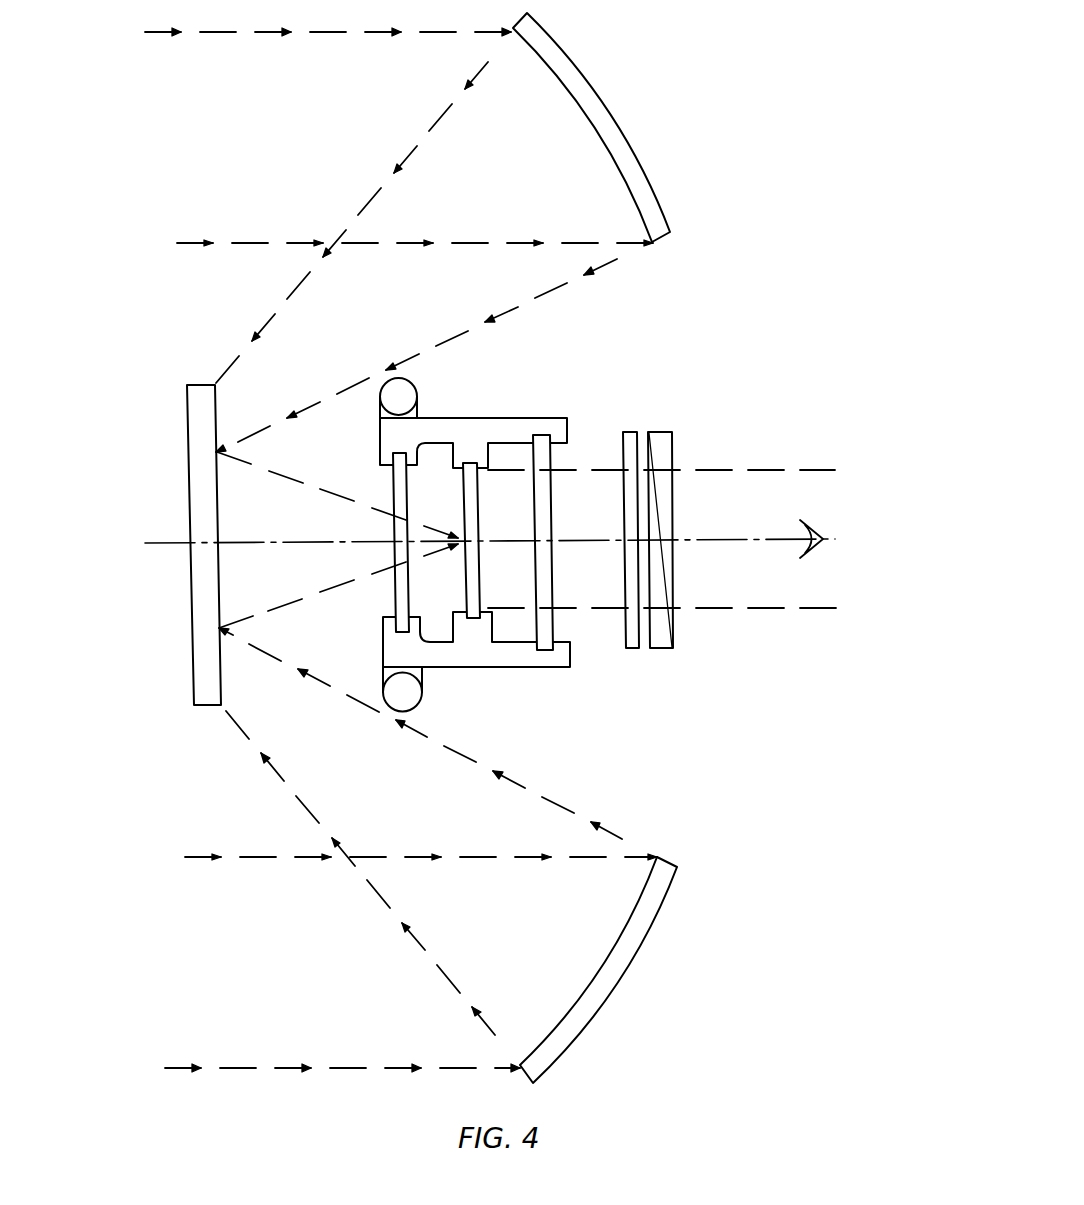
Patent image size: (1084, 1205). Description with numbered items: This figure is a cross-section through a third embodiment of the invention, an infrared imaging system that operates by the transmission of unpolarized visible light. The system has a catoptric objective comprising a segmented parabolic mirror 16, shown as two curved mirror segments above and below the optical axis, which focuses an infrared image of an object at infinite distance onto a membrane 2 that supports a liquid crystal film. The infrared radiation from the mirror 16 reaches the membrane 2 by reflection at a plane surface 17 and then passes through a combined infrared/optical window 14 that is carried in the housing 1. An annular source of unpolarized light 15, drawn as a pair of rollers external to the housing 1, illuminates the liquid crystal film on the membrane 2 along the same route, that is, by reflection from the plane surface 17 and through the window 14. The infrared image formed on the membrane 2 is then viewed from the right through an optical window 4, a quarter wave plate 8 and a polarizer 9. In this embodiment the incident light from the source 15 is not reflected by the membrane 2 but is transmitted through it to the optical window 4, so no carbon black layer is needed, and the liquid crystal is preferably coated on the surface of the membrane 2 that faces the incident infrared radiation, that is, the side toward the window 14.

The housing 1 is at (493, 417).
The membrane 2 is at (482, 567).
The optical window 4 is at (553, 590).
The quarter wave plate 8 is at (633, 649).
The polarizer 9 is at (660, 648).
The combined infrared/optical window 14 is at (393, 595).
The annular source of unpolarized light 15 is at (410, 397).
The segmented parabolic mirror 16 is at (582, 88).
The plane surface 17 is at (190, 581).